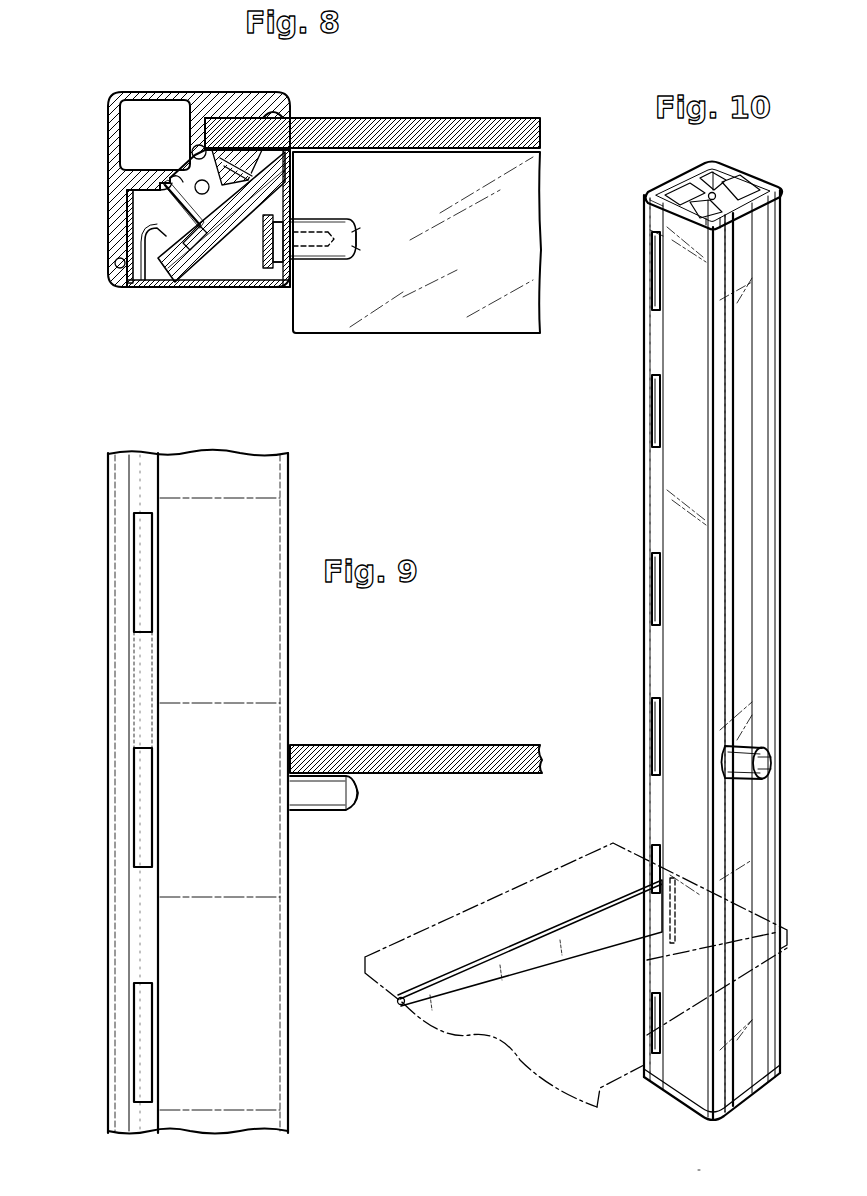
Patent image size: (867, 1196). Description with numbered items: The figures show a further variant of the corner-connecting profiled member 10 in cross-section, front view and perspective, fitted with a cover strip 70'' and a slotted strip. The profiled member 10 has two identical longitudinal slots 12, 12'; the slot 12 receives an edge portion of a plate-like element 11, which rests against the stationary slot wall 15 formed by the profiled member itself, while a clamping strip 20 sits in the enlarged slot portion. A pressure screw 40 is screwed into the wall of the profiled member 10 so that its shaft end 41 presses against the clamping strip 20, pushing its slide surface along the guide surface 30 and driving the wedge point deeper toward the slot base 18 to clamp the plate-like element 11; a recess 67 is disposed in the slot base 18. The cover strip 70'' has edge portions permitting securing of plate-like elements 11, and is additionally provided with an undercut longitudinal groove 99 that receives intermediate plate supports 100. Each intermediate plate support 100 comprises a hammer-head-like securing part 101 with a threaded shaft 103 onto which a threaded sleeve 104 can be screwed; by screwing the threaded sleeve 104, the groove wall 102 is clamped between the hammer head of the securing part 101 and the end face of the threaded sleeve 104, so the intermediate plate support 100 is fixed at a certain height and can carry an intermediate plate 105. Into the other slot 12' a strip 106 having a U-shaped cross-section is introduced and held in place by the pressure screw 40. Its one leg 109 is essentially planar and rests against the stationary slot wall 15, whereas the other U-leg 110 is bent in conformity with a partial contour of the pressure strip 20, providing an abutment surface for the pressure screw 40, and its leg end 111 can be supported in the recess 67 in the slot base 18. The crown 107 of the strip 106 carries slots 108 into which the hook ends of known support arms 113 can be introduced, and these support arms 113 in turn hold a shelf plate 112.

In FIG. 8, the profiled member 10 is at (176, 90).
In FIG. 9, the profiled member 10 is at (104, 490).
In FIG. 10, the profiled member 10 is at (692, 173).
In FIG. 8, the plate-like element 11 is at (436, 127).
In FIG. 8, the slot 12 is at (275, 84).
In FIG. 10, the slot 12 is at (724, 187).
In FIG. 8, the slot 12' is at (98, 235).
In FIG. 10, the slot 12' is at (632, 204).
In FIG. 8, the stationary slot wall 15 is at (127, 208).
In FIG. 8, the slot base 18 is at (147, 183).
In FIG. 8, the clamping strip 20 is at (228, 140).
In FIG. 8, the guide surface 30 is at (232, 228).
In FIG. 8, the pressure screw 40 is at (200, 247).
In FIG. 8, the shaft end 41 is at (197, 257).
In FIG. 8, the recess 67 is at (170, 180).
In FIG. 8, the cover strip 70'' is at (227, 274).
In FIG. 8, the undercut longitudinal groove 99 is at (279, 272).
In FIG. 10, the undercut longitudinal groove 99 is at (727, 340).
In FIG. 8, the intermediate plate support 100 is at (345, 256).
In FIG. 9, the intermediate plate support 100 is at (340, 803).
In FIG. 10, the intermediate plate support 100 is at (730, 768).
In FIG. 8, the securing part 101 is at (290, 217).
In FIG. 8, the groove wall 102 is at (293, 268).
In FIG. 8, the threaded shaft 103 is at (328, 225).
In FIG. 8, the threaded sleeve 104 is at (357, 247).
In FIG. 8, the intermediate plate 105 is at (433, 318).
In FIG. 9, the intermediate plate 105 is at (474, 750).
In FIG. 8, the strip having U-shaped cross-section 106 is at (127, 283).
In FIG. 9, the strip having U-shaped cross-section 106 is at (145, 453).
In FIG. 10, the strip having U-shaped cross-section 106 is at (657, 512).
In FIG. 9, the crown 107 is at (140, 663).
In FIG. 9, the slots 108 is at (143, 821).
In FIG. 10, the slots 108 is at (657, 418).
In FIG. 8, the leg 109 is at (130, 242).
In FIG. 8, the U-leg 110 is at (143, 265).
In FIG. 8, the leg end 111 is at (163, 177).
In FIG. 10, the shelf plate 112 is at (460, 920).
In FIG. 10, the support arms 113 is at (541, 958).